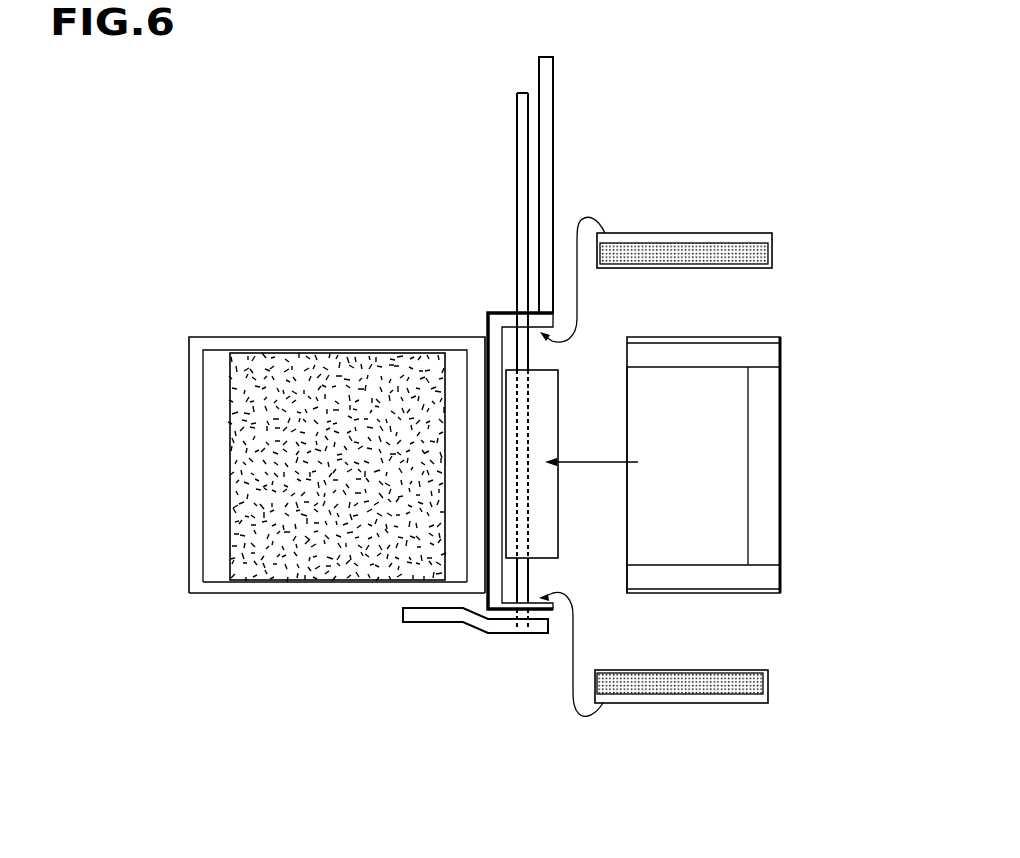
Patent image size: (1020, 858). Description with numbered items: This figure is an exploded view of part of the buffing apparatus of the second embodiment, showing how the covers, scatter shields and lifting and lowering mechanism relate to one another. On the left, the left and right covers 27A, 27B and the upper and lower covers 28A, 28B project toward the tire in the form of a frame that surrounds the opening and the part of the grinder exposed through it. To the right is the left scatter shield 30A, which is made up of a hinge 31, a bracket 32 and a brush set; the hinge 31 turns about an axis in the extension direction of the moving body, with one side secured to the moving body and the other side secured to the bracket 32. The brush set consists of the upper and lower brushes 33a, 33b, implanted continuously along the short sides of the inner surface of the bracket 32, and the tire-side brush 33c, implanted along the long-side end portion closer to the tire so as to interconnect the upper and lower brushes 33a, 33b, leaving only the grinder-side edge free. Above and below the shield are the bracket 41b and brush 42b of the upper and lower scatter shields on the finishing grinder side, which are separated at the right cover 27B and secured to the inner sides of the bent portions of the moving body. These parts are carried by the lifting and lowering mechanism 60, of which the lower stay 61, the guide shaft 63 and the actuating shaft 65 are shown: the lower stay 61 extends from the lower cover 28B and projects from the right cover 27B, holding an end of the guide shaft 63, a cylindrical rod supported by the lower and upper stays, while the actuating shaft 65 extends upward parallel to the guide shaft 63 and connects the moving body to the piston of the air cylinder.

The left cover 27A is at (196, 388).
The right cover 27B is at (477, 393).
The upper cover 28A is at (356, 343).
The lower cover 28B is at (306, 590).
The left scatter shield 30A is at (744, 468).
The hinge 31 is at (560, 366).
The bracket 32 is at (626, 552).
The upper brush 33a is at (767, 355).
The lower brush 33b is at (765, 580).
The tire-side brush 33c is at (763, 460).
The bracket 41b is at (653, 233).
The brush 42b is at (772, 253).
The lifting and lowering mechanism 60 is at (527, 365).
The lower stay 61 is at (463, 615).
The guide shaft 63 is at (517, 146).
The actuating shaft 65 is at (553, 137).